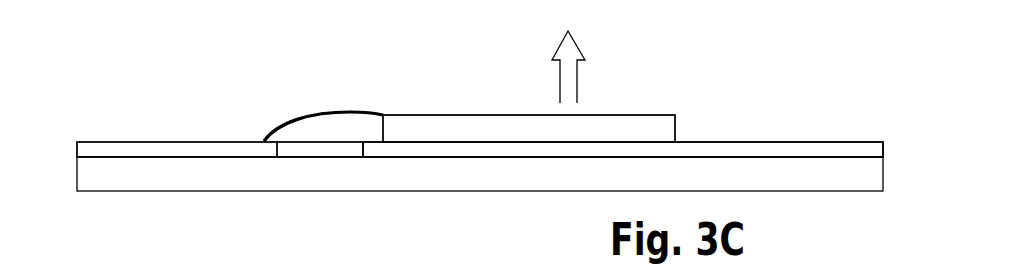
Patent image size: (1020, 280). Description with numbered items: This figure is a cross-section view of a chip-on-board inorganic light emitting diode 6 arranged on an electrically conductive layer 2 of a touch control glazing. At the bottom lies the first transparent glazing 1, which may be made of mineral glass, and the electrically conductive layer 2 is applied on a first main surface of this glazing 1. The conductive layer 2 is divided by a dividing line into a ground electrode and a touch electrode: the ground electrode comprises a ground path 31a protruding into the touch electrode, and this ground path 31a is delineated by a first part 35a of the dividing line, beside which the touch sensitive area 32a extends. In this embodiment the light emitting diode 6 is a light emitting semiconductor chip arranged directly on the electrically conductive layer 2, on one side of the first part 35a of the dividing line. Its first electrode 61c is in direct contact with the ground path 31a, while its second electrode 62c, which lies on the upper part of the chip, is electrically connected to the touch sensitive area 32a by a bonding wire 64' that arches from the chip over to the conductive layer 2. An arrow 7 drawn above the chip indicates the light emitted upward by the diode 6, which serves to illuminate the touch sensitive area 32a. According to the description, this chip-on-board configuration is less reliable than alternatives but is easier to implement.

The first transparent glazing 1 is at (132, 173).
The electrically conductive layer 2 is at (83, 152).
The touch sensitive area 32a is at (206, 150).
The first part of the dividing line 35a is at (330, 150).
The ground path 31a is at (775, 150).
The first electrode 61c is at (543, 145).
The second electrode 62c is at (467, 113).
The bonding wire 64' is at (323, 94).
The light emitting diode 6 is at (625, 127).
The emitted light arrow 7 is at (577, 87).